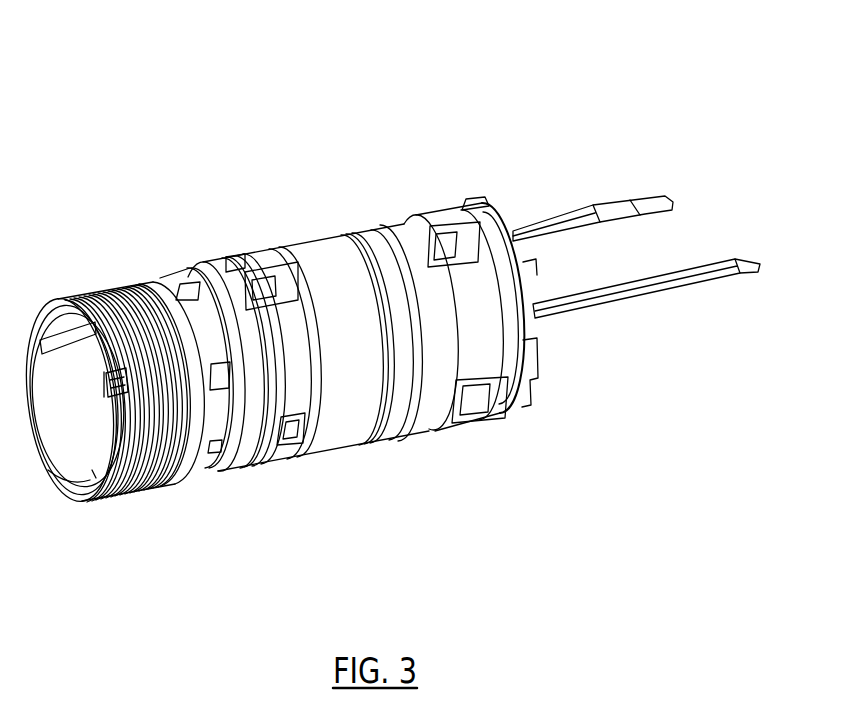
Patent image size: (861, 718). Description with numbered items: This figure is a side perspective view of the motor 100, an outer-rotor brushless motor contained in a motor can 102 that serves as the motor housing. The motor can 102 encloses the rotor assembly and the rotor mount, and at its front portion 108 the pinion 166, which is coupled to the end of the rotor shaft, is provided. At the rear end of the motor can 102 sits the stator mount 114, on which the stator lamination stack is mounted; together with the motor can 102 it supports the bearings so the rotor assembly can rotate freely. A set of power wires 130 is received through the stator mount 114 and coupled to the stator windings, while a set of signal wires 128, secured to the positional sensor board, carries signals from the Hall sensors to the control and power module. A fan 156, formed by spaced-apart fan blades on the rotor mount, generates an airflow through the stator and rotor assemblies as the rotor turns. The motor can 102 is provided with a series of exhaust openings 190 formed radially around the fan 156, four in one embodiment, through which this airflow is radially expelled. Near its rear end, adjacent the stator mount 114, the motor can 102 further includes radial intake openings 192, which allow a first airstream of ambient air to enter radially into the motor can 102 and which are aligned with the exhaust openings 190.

The motor 100 is at (152, 42).
The motor can 102 is at (329, 212).
The front portion 108 is at (97, 260).
The stator mount 114 is at (473, 187).
The signal wires 128 is at (572, 220).
The power wires 130 is at (658, 288).
The fan 156 is at (262, 278).
The pinion 166 is at (113, 400).
The exhaust openings 190 is at (238, 262).
The radial intake openings 192 is at (445, 227).